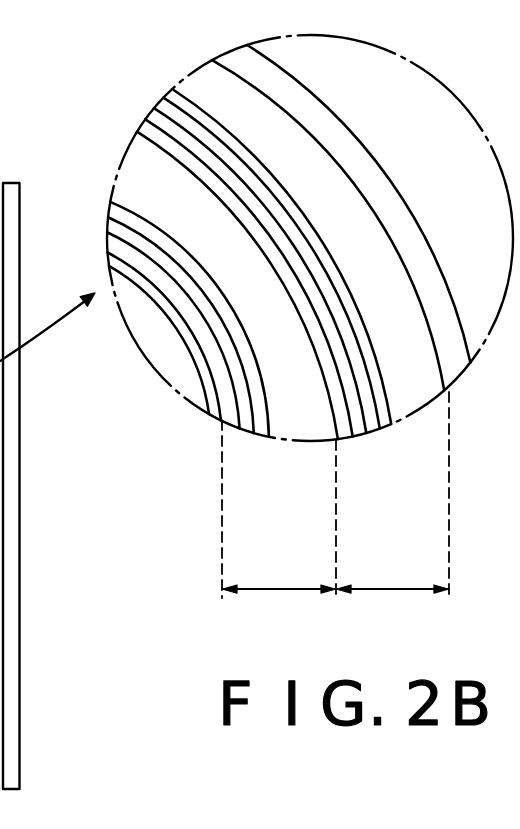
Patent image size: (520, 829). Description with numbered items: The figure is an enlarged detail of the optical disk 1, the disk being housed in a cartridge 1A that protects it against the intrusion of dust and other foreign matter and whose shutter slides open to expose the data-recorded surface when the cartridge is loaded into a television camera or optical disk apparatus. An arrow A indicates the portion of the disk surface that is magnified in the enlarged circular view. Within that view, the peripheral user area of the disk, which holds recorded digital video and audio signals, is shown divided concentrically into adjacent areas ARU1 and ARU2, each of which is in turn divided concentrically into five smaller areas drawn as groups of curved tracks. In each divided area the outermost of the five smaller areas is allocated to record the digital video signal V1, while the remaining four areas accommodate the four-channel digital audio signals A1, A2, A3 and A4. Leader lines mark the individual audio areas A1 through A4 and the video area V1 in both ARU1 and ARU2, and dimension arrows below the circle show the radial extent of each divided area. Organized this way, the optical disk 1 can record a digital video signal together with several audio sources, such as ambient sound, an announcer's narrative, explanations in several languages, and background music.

The optical disk 1 is at (416, 222).
The cartridge 1A is at (12, 748).
The viewing direction arrow A is at (47, 336).
The digital audio signal A1 is at (110, 201).
The digital audio signal A2 is at (108, 217).
The digital audio signal A3 is at (107, 233).
The digital audio signal A4 is at (107, 253).
The digital video signal V1 is at (132, 172).
The divided user area ARU1 is at (393, 511).
The divided user area ARU2 is at (279, 525).